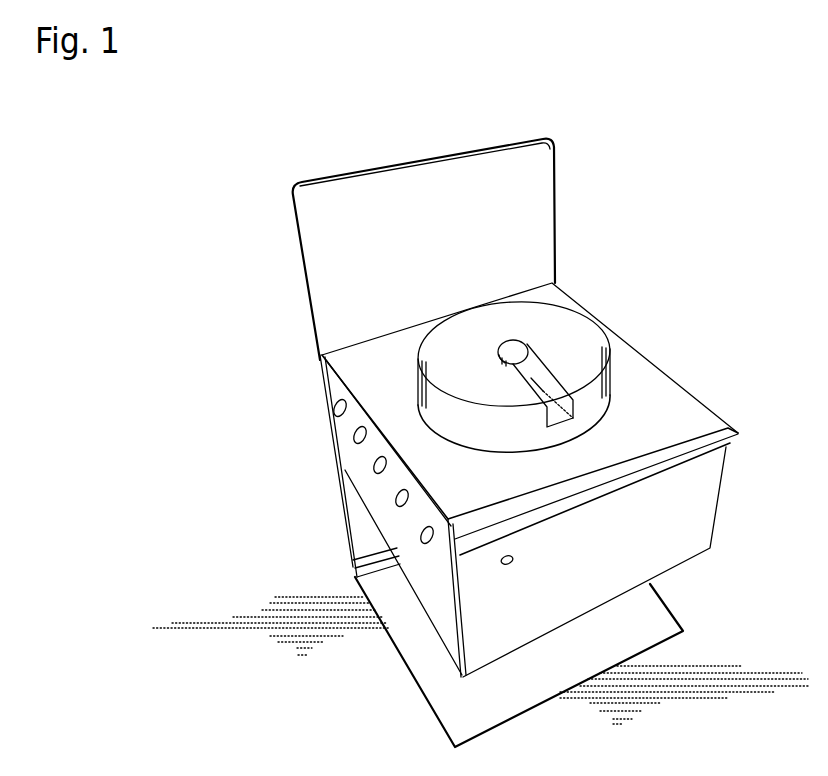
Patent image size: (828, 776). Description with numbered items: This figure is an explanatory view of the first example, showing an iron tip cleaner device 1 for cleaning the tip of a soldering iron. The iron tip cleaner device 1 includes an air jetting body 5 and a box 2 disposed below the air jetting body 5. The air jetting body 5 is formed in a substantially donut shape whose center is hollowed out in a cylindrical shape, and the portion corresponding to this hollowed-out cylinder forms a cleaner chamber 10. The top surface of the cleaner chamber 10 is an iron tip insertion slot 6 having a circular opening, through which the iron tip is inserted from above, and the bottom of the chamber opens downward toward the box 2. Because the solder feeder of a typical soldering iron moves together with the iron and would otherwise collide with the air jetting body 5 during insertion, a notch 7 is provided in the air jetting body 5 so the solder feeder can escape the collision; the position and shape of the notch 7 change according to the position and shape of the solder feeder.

The iron tip cleaner device 1 is at (590, 283).
The box 2 is at (700, 497).
The air jetting body 5 is at (486, 363).
The iron tip insertion slot 6 is at (521, 342).
The notch 7 is at (560, 420).
The cleaner chamber 10 is at (497, 352).